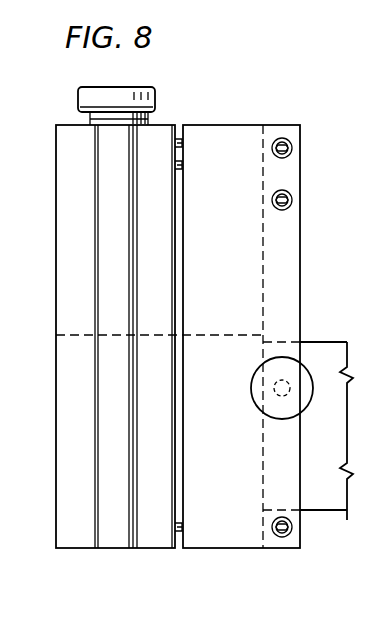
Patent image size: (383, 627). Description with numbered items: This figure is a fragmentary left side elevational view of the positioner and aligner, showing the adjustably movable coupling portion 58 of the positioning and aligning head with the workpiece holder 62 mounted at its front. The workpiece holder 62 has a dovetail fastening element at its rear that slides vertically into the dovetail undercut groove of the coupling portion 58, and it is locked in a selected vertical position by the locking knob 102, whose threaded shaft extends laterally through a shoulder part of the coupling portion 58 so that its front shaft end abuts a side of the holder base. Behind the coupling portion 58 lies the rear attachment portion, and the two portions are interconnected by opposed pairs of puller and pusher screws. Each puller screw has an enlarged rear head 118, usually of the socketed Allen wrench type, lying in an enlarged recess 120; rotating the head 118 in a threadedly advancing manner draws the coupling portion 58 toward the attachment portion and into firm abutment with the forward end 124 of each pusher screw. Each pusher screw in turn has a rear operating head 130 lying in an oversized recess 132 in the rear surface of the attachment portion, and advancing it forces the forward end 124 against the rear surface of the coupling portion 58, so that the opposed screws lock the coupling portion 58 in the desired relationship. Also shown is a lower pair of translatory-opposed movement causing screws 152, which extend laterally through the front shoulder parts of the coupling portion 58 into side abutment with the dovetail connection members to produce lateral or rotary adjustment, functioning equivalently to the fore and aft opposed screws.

The coupling portion 58 is at (106, 554).
The workpiece holder 62 is at (325, 522).
The forward end of pusher translatory movement element 124 is at (178, 143).
The locking knob 102 is at (313, 372).
The enlarged recess 120 is at (361, 391).
The rear head of puller screw 118 is at (361, 476).
The oversized recess 132 is at (323, 507).
The rear operating head 130 is at (323, 445).
The lower pair of translatory-opposed movement causing screws 152 is at (289, 542).